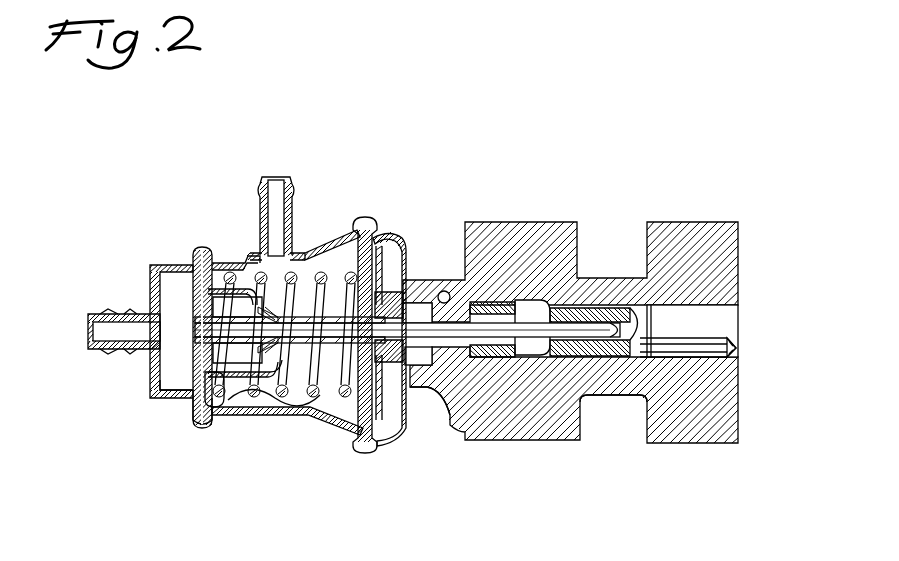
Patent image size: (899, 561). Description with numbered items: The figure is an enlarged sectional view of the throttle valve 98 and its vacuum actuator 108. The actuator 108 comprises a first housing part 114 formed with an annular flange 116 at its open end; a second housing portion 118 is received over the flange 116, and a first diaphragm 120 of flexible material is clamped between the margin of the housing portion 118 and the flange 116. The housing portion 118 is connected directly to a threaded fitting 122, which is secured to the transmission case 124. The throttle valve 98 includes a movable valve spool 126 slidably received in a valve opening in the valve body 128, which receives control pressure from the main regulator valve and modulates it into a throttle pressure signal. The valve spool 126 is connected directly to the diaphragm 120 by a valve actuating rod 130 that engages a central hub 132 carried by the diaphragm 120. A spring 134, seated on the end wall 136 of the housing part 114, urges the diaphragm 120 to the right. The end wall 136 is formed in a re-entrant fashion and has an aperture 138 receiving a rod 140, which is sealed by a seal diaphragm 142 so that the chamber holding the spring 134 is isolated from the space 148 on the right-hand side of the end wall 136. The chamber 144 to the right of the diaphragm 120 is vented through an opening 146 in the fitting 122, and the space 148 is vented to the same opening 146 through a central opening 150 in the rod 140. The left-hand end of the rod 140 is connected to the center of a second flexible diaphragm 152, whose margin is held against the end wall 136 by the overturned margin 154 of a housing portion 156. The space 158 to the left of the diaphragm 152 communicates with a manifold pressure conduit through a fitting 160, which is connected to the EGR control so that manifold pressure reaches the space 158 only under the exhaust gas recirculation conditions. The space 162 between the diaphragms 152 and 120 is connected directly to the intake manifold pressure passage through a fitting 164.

The throttle valve 98 is at (688, 368).
The actuator 108 is at (318, 432).
The first housing part 114 is at (400, 242).
The annular flange 116 is at (380, 252).
The second housing portion 118 is at (412, 282).
The first diaphragm 120 is at (394, 420).
The threaded fitting 122 is at (430, 392).
The transmission case 124 is at (522, 222).
The valve spool 126 is at (739, 306).
The valve body 128 is at (706, 222).
The valve actuating rod 130 is at (598, 345).
The central hub 132 is at (444, 291).
The spring 134 is at (320, 268).
The end wall 136 is at (203, 248).
The aperture 138 is at (302, 423).
The rod 140 is at (320, 440).
The seal diaphragm 142 is at (251, 422).
The chamber 144 is at (390, 442).
The opening 146 is at (520, 350).
The space 148 is at (190, 286).
The central opening 150 is at (238, 417).
The second flexible diaphragm 152 is at (186, 274).
The overturned margin 154 is at (192, 432).
The housing portion 156 is at (152, 392).
The space 158 is at (150, 338).
The fitting 160 is at (92, 318).
The space 162 is at (308, 432).
The fitting 164 is at (273, 195).